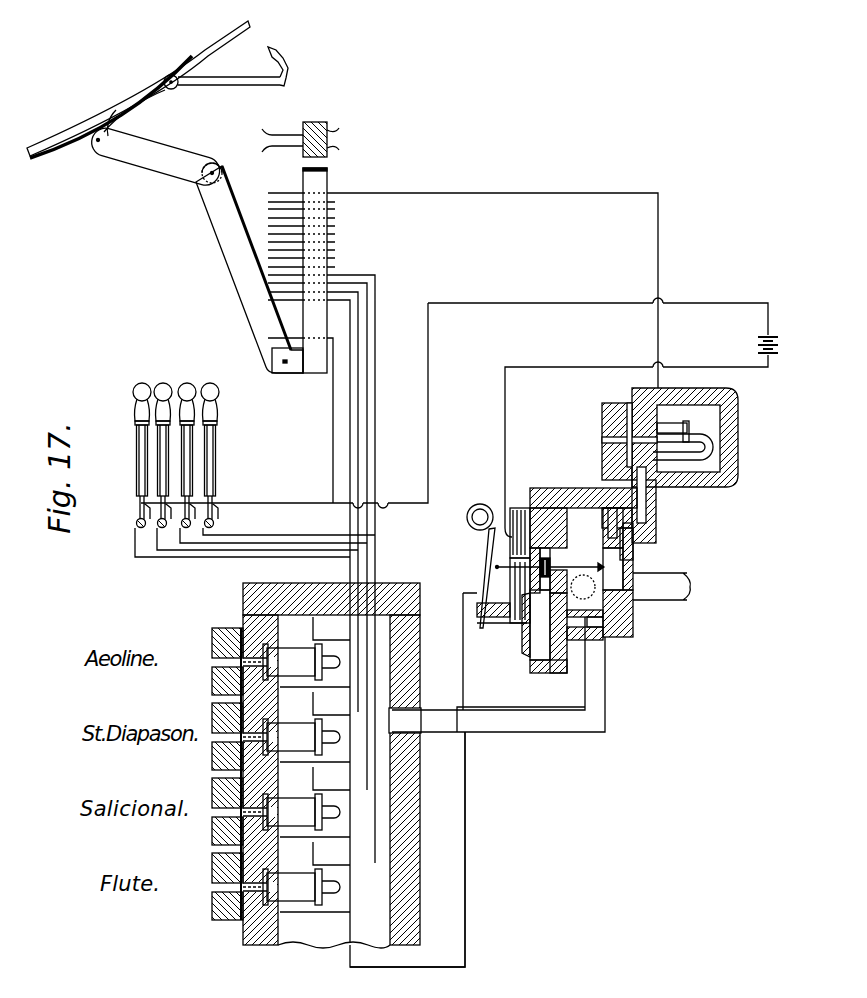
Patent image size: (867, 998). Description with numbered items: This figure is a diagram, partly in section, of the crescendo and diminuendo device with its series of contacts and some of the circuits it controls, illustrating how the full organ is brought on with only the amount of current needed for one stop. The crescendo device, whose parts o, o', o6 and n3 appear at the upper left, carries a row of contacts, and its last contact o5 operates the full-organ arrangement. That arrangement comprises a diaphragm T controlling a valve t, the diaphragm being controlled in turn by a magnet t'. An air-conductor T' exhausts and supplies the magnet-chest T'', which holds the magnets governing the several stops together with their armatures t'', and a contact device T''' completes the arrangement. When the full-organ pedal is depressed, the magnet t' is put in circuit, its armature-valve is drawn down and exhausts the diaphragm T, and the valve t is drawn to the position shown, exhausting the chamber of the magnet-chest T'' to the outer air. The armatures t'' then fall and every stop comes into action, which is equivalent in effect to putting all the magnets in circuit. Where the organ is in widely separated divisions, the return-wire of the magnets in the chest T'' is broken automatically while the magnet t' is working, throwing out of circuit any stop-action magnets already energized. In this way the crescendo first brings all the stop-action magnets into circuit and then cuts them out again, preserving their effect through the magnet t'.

The key o is at (157, 104).
The contact finger o' is at (306, 409).
The last contact o5 is at (298, 270).
The contact pins o6 is at (273, 240).
The lever arm n3 is at (249, 242).
The diaphragm T is at (641, 580).
The air-conductor T' is at (434, 824).
The magnet-chest T'' is at (423, 753).
The contact device T''' is at (518, 618).
The valve t is at (550, 564).
The magnet t' is at (679, 474).
The armatures t'' is at (214, 761).